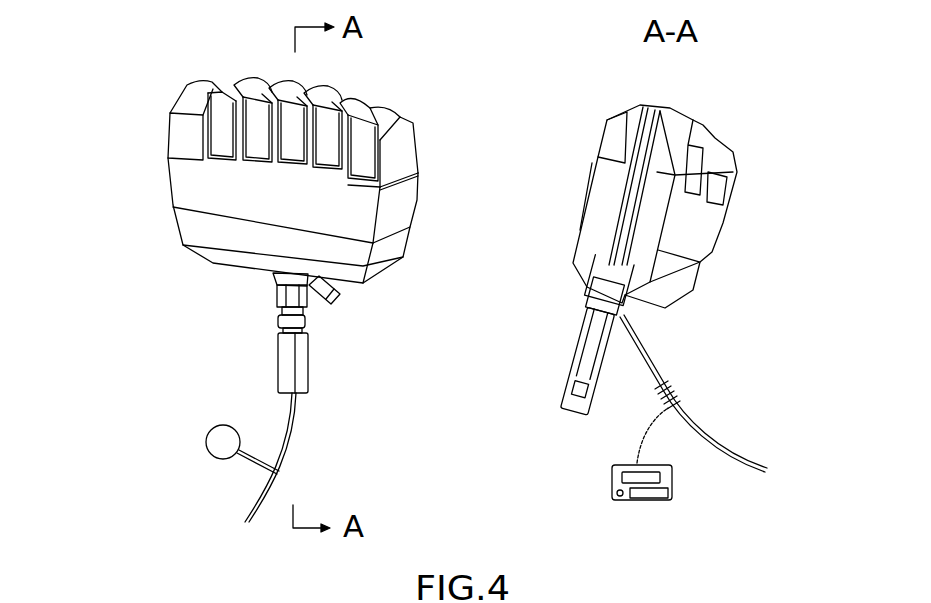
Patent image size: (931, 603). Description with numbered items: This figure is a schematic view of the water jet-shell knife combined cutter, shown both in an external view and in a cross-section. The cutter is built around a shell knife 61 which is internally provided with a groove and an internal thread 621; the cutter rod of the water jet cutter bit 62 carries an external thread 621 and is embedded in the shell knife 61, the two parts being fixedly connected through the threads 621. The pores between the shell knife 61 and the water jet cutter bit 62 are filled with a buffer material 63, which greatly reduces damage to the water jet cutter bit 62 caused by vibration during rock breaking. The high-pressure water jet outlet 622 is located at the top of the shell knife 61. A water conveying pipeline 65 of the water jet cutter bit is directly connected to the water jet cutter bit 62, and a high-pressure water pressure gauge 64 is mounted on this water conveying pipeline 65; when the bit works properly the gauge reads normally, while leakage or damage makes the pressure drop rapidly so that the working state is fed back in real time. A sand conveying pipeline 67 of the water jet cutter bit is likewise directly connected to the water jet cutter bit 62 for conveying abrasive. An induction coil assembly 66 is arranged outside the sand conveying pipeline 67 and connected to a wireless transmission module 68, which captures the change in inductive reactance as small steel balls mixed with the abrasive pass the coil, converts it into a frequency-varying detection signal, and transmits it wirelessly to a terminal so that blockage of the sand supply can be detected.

The shell knife 61 is at (212, 227).
The high-pressure water jet outlet 622 is at (323, 85).
The water jet cutter bit 62 is at (290, 362).
The water conveying pipeline of water jet cutter bit 65 is at (297, 420).
The high-pressure water pressure gauge 64 is at (213, 457).
The buffer material 63 is at (642, 190).
The thread 621 is at (630, 272).
The induction coil assembly 66 is at (680, 402).
The sand conveying pipeline of water jet cutter bit 67 is at (747, 467).
The wireless transmission module 68 is at (612, 480).